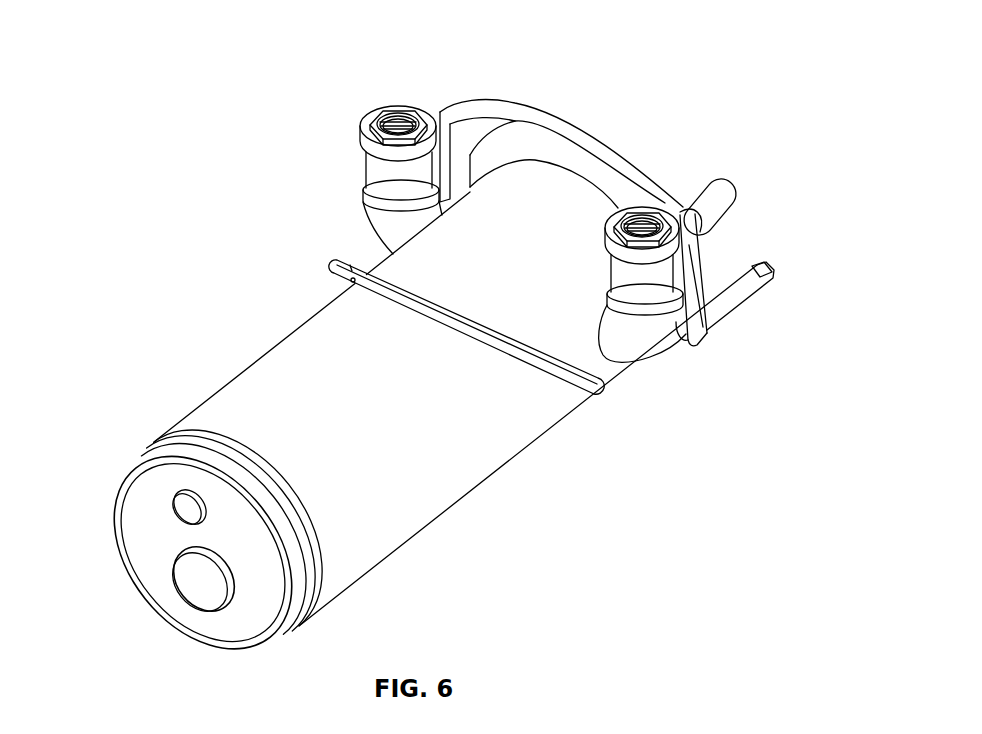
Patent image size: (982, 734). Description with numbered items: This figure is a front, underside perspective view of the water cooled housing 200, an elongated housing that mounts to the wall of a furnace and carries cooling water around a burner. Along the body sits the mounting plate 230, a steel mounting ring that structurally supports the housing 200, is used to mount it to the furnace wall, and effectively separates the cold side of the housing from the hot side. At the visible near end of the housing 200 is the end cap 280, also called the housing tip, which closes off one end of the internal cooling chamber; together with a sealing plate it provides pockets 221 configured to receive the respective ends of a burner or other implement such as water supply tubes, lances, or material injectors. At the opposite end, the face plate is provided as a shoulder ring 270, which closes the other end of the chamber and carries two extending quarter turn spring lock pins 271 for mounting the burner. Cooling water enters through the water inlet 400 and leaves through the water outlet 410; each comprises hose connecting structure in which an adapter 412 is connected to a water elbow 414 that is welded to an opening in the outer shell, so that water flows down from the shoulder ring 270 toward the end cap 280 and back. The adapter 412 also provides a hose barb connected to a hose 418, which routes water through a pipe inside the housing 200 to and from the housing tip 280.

The water cooled housing 200 is at (417, 453).
The pockets 221 is at (188, 512).
The mounting plate 230 is at (610, 403).
The shoulder ring 270 is at (563, 152).
The quarter turn spring lock pins 271 is at (743, 291).
The end cap 280 is at (248, 623).
The water inlet 400 is at (721, 234).
The water outlet 410 is at (398, 106).
The adapter 412 is at (375, 173).
The water elbow 414 is at (397, 230).
The hose 418 is at (713, 196).